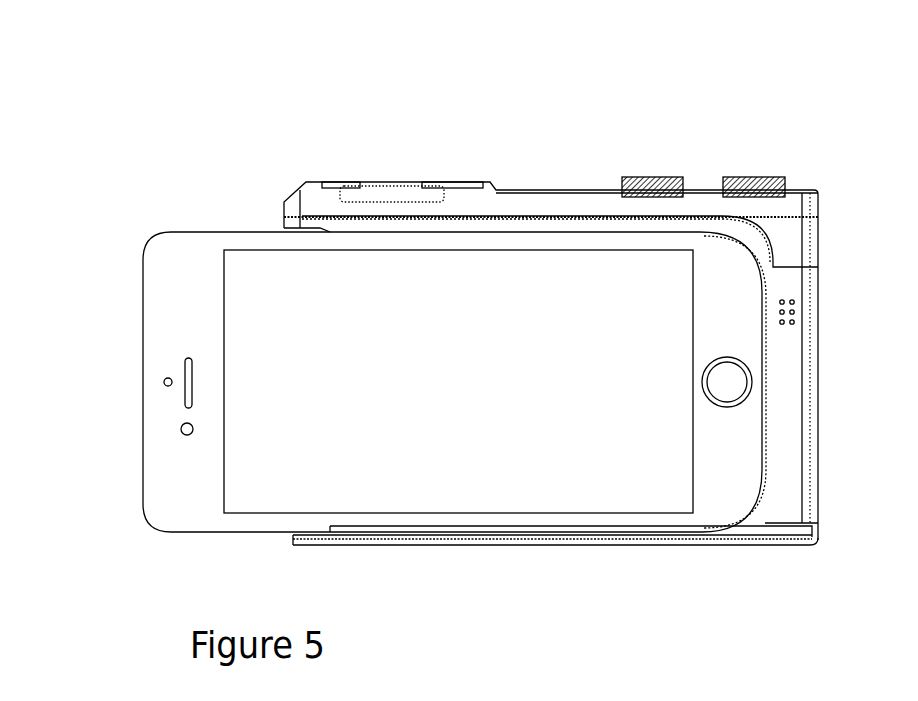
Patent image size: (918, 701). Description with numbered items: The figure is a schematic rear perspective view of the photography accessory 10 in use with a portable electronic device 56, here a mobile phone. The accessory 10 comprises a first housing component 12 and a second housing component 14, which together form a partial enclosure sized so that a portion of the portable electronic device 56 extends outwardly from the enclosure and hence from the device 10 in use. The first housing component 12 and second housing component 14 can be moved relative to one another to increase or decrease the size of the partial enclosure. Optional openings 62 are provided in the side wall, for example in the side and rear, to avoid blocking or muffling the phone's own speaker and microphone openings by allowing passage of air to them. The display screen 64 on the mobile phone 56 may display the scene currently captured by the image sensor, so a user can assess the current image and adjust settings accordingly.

The photography accessory 10 is at (368, 134).
The first housing component 12 is at (537, 200).
The second housing component 14 is at (725, 545).
The portable electronic device 56 is at (175, 312).
The openings 62 is at (795, 303).
The display screen 64 is at (303, 452).